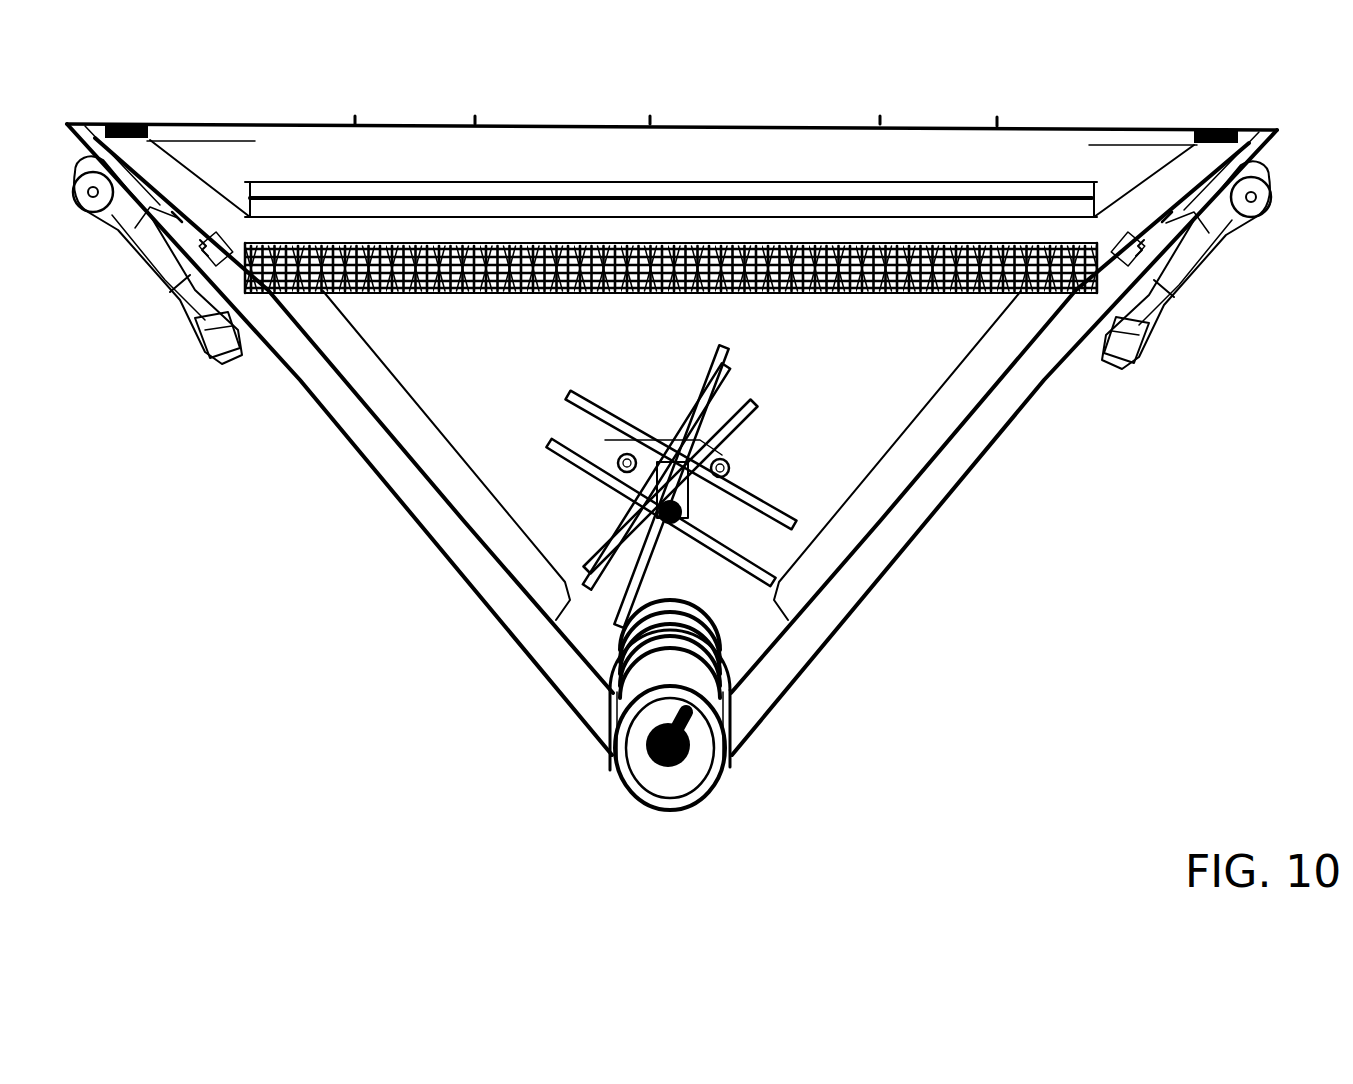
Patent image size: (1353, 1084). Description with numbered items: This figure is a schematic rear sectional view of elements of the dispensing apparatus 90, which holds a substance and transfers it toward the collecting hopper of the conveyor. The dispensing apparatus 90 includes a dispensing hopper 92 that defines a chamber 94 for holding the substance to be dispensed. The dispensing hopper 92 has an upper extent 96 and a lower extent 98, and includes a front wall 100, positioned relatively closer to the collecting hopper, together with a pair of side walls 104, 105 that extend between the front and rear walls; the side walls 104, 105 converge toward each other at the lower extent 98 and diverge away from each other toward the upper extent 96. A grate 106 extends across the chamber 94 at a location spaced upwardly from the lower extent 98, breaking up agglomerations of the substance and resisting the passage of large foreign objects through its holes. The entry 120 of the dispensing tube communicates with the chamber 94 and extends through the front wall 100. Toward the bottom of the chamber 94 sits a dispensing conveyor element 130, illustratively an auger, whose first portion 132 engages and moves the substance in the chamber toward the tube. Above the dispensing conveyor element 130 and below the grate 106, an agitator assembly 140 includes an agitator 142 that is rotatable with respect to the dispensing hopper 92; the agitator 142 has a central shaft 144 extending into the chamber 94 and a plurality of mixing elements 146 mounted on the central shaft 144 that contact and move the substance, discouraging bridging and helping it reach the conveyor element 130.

The dispensing apparatus 90 is at (293, 690).
The dispensing hopper 92 is at (378, 528).
The chamber 94 is at (458, 378).
The upper extent 96 is at (250, 353).
The lower extent 98 is at (548, 746).
The front wall 100 is at (860, 427).
The side wall 104 is at (462, 587).
The side wall 105 is at (957, 487).
The grate 106 is at (983, 293).
The entry 120 is at (727, 660).
The dispensing conveyor element 130 is at (688, 768).
The first portion 132 is at (703, 743).
The agitator assembly 140 is at (790, 489).
The agitator 142 is at (586, 504).
The central shaft 144 is at (703, 530).
The mixing elements 146 is at (613, 603).